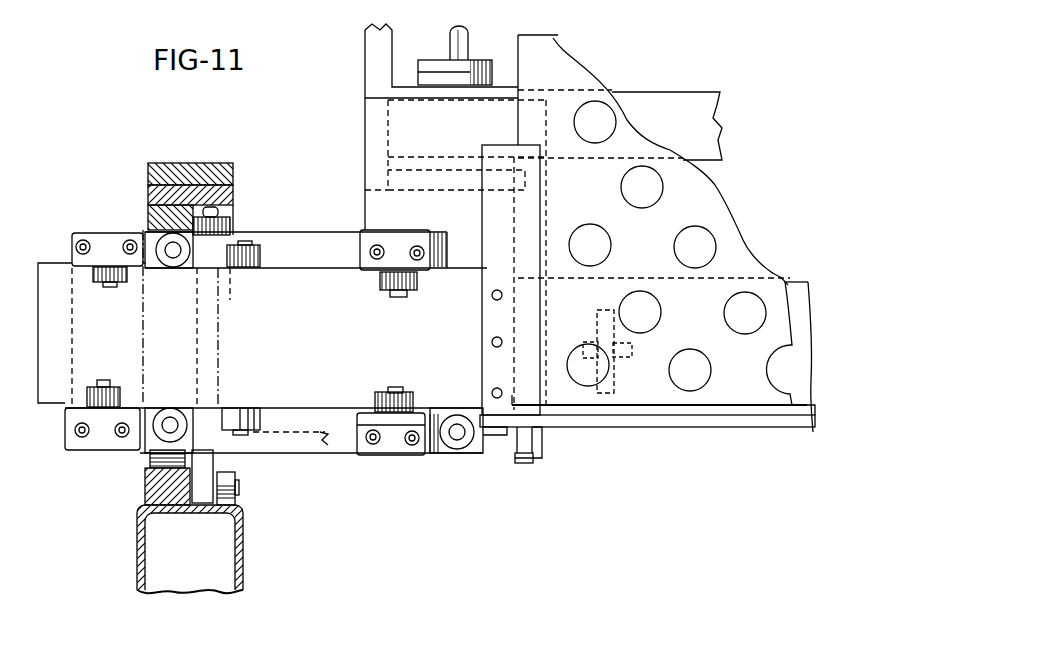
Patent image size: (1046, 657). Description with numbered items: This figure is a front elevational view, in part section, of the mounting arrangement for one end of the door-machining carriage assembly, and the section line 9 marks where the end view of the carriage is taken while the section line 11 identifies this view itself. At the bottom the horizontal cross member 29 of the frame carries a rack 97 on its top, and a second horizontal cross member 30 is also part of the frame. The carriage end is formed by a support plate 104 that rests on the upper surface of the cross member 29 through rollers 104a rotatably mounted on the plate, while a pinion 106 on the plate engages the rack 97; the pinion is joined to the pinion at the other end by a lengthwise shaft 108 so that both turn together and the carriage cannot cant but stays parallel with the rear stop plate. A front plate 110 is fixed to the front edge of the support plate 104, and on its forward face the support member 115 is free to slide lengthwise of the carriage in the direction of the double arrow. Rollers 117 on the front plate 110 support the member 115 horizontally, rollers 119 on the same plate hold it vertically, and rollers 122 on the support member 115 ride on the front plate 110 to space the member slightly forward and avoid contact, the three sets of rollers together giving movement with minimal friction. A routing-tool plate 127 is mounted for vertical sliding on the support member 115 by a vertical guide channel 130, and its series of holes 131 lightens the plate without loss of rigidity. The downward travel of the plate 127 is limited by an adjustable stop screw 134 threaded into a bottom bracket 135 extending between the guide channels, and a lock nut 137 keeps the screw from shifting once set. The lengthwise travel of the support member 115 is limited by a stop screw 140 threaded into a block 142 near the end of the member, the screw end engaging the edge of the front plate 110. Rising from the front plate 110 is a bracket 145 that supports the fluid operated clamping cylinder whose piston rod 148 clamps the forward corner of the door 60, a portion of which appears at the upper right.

The section line 9— 9 is at (143, 228).
The section line 11— 11 is at (412, 3).
The horizontal cross member 29 is at (240, 573).
The horizontal cross member 30 is at (226, 148).
The door 60 is at (705, 98).
The rack 97 is at (153, 493).
The support plate 104 is at (203, 465).
The rollers 104a is at (228, 497).
The pinion 106 is at (147, 478).
The shaft 108 is at (317, 458).
The front plate 110 is at (301, 252).
The support member 115 is at (57, 283).
The rollers 117 is at (173, 263).
The rollers 119 is at (97, 283).
The rollers 122 is at (347, 336).
The plate 127 is at (568, 70).
The guide channel 130 is at (493, 233).
The holes 131 is at (605, 103).
The stop screw 134 is at (523, 465).
The bottom bracket 135 is at (668, 428).
The lock nut 137 is at (538, 442).
The stop screw 140 is at (577, 350).
The block 142 is at (600, 322).
The bracket 145 is at (377, 58).
The piston rod 148 is at (460, 45).